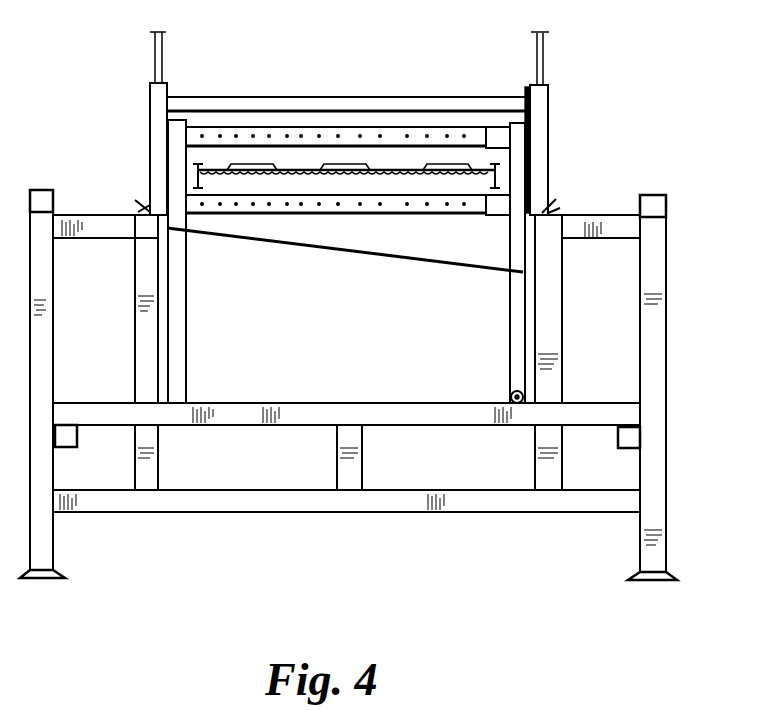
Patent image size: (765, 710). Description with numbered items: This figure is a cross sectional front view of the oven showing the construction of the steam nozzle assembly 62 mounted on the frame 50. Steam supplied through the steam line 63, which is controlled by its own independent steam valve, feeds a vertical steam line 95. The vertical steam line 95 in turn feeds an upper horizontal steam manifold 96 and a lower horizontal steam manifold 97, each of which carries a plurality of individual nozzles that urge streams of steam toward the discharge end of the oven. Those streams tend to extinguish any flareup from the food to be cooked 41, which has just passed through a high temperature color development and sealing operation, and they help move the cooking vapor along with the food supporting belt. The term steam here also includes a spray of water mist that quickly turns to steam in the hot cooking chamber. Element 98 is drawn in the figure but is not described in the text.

The food to be cooked 41 is at (255, 167).
The frame 50 is at (606, 216).
The steam nozzle assembly 62 is at (215, 127).
The steam line 63 is at (511, 394).
The vertical steam line 95 is at (516, 332).
The upper horizontal steam manifold 96 is at (331, 127).
The lower horizontal steam manifold 97 is at (272, 213).
The perforated bars 98 is at (427, 130).